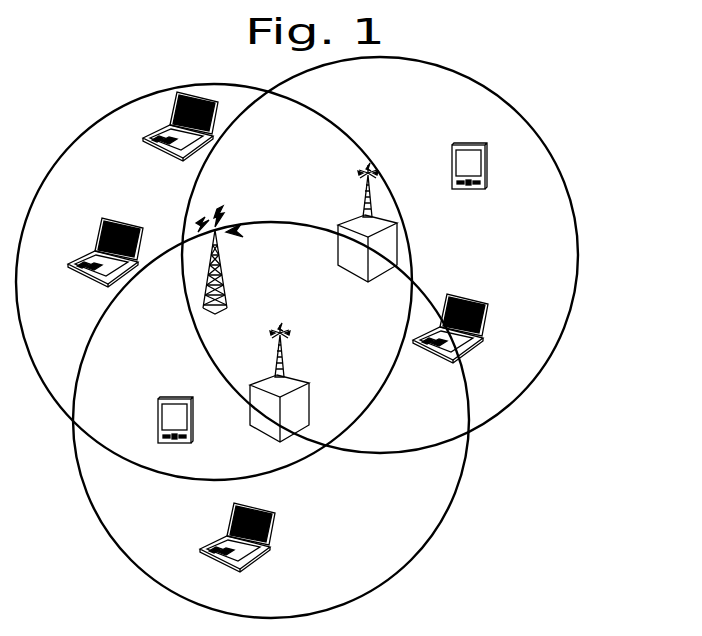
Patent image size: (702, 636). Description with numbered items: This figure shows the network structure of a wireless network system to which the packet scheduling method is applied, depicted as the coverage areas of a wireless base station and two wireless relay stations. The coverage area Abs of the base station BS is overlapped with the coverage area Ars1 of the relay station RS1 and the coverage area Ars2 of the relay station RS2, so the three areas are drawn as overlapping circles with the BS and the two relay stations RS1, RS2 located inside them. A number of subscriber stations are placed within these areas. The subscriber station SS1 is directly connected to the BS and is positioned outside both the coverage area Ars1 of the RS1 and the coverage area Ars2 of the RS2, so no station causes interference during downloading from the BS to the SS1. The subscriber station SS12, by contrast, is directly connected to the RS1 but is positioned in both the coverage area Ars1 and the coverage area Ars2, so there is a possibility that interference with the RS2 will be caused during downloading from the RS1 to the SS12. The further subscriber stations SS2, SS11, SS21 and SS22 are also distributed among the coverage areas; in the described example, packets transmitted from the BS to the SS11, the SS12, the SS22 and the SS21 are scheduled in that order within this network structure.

The coverage area of the BS Abs is at (98, 121).
The coverage area of the RS1 Ars1 is at (580, 230).
The coverage area of the RS2 Ars2 is at (445, 515).
The wireless base station BS is at (219, 276).
The wireless relay station RS1 is at (367, 239).
The wireless relay station RS2 is at (276, 399).
The subscriber station SS1 is at (180, 143).
The subscriber station SS2 is at (103, 262).
The subscriber station SS11 is at (472, 184).
The subscriber station SS12 is at (446, 345).
The subscriber station SS21 is at (237, 552).
The subscriber station SS22 is at (178, 437).